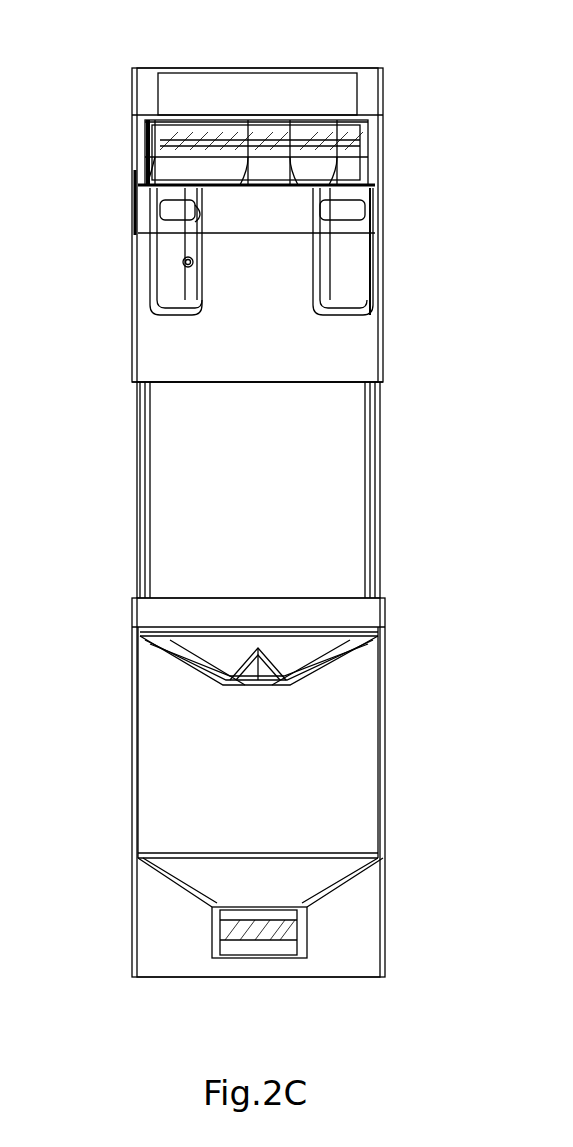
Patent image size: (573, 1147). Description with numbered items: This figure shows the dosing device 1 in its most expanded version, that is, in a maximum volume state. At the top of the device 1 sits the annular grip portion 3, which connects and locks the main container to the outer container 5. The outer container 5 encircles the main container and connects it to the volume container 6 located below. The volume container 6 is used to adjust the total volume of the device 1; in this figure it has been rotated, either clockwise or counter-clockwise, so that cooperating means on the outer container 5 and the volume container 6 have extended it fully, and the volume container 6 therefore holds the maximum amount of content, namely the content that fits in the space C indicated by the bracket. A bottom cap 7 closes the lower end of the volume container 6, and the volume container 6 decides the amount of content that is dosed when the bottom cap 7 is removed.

The device 1 is at (258, 489).
The annular grip portion 3 is at (378, 264).
The outer container 5 is at (355, 455).
The volume container 6 is at (183, 766).
The bottom cap 7 is at (158, 940).
The space C is at (392, 631).